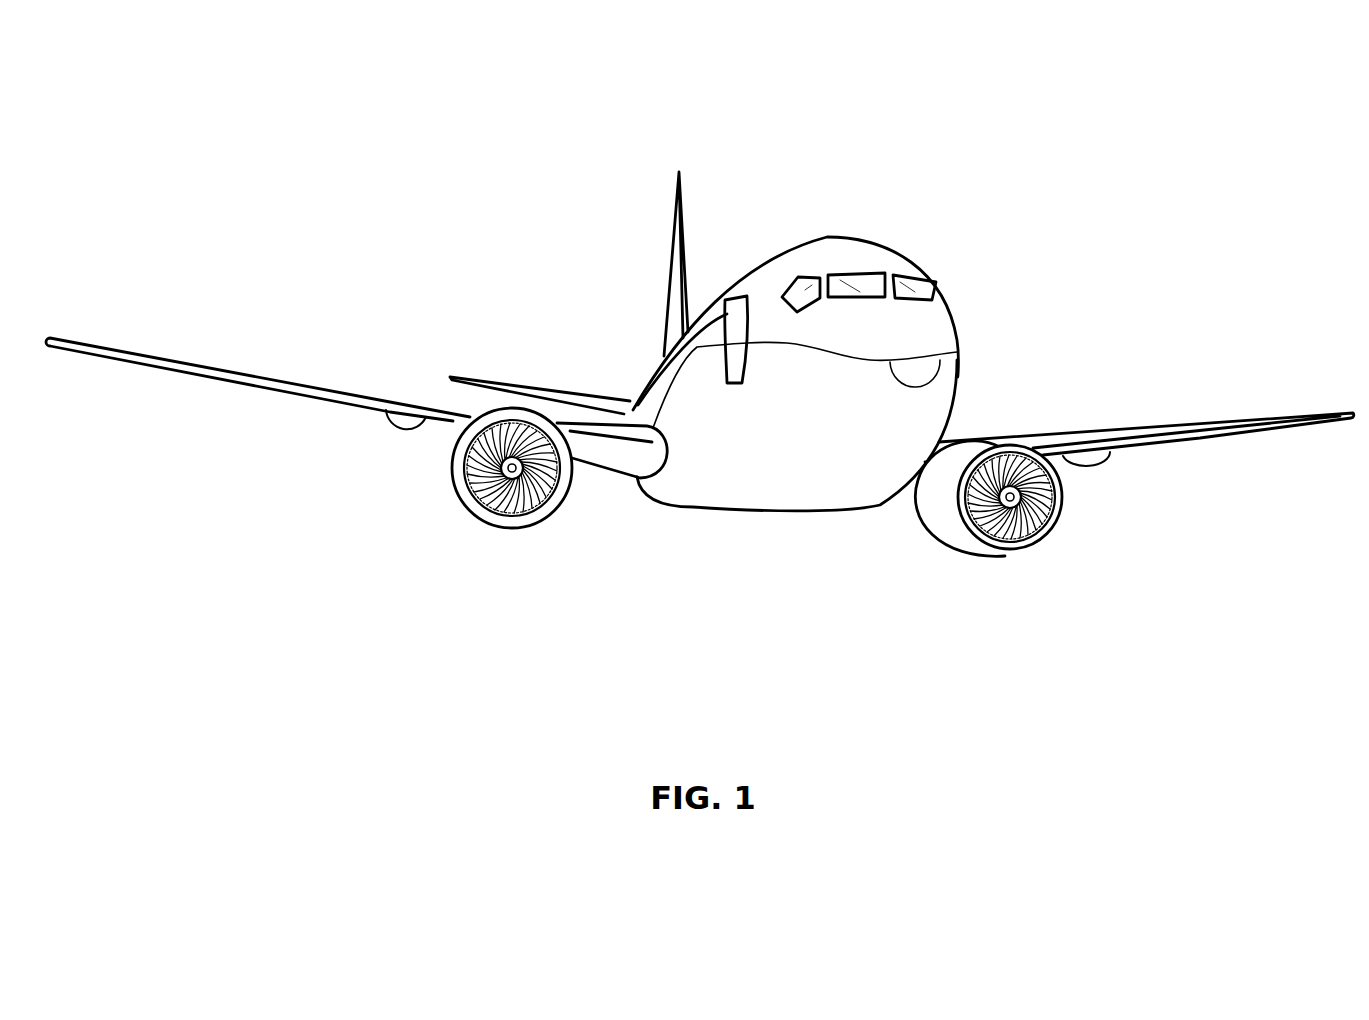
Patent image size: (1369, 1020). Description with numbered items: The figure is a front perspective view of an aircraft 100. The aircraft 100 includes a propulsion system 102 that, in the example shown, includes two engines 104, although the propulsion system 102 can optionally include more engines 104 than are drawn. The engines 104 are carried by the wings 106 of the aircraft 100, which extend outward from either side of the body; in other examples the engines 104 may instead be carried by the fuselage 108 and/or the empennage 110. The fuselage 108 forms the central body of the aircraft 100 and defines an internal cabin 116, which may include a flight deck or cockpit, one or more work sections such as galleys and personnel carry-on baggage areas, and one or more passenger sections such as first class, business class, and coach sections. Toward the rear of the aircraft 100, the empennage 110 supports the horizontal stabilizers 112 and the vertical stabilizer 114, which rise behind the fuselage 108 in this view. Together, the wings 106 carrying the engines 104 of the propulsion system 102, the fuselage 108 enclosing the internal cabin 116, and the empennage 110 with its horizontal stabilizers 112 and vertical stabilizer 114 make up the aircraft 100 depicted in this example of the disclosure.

The aircraft 100 is at (378, 106).
The propulsion system 102 is at (407, 572).
The engines 104 is at (507, 528).
The wings 106 is at (224, 368).
The fuselage 108 is at (962, 312).
The empennage 110 is at (660, 360).
The horizontal stabilizers 112 is at (493, 378).
The vertical stabilizer 114 is at (675, 223).
The internal cabin 116 is at (860, 283).